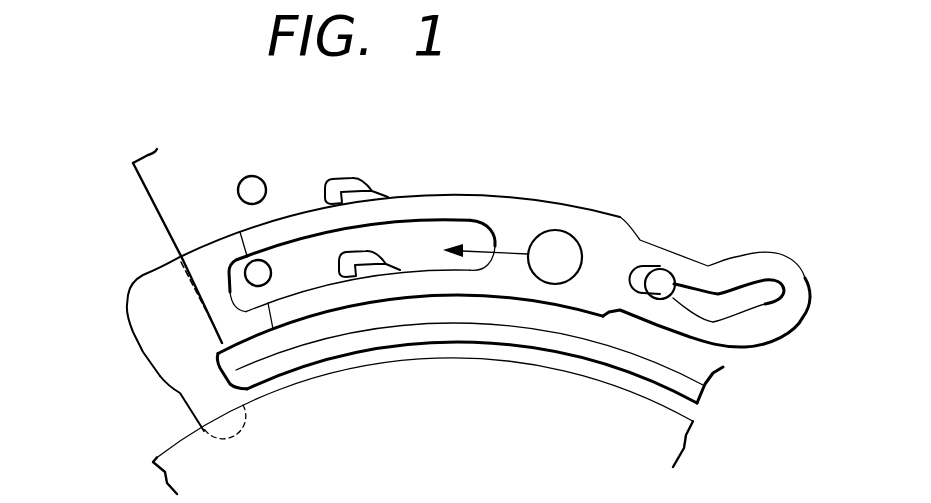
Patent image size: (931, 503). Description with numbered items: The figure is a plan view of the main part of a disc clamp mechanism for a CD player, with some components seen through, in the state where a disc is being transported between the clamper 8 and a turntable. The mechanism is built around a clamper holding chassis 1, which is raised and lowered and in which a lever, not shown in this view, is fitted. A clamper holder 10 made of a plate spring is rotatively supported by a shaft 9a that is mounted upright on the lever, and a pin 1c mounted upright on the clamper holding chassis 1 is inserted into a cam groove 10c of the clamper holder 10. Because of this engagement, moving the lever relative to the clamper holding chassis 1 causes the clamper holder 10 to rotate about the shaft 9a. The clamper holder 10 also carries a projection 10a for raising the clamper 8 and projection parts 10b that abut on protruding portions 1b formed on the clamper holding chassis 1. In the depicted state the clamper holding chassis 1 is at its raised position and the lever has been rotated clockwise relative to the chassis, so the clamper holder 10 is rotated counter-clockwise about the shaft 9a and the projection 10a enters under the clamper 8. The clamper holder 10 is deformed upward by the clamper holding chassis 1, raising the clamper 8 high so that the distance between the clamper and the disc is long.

The clamper holding chassis 1 is at (157, 182).
The protruding portions 1b is at (245, 275).
The pin 1c is at (662, 278).
The clamper 8 is at (177, 443).
The shaft 9a is at (572, 232).
The clamper holder 10 is at (474, 195).
The projection 10a is at (230, 423).
The projection parts 10b is at (361, 251).
The cam groove 10c is at (717, 290).